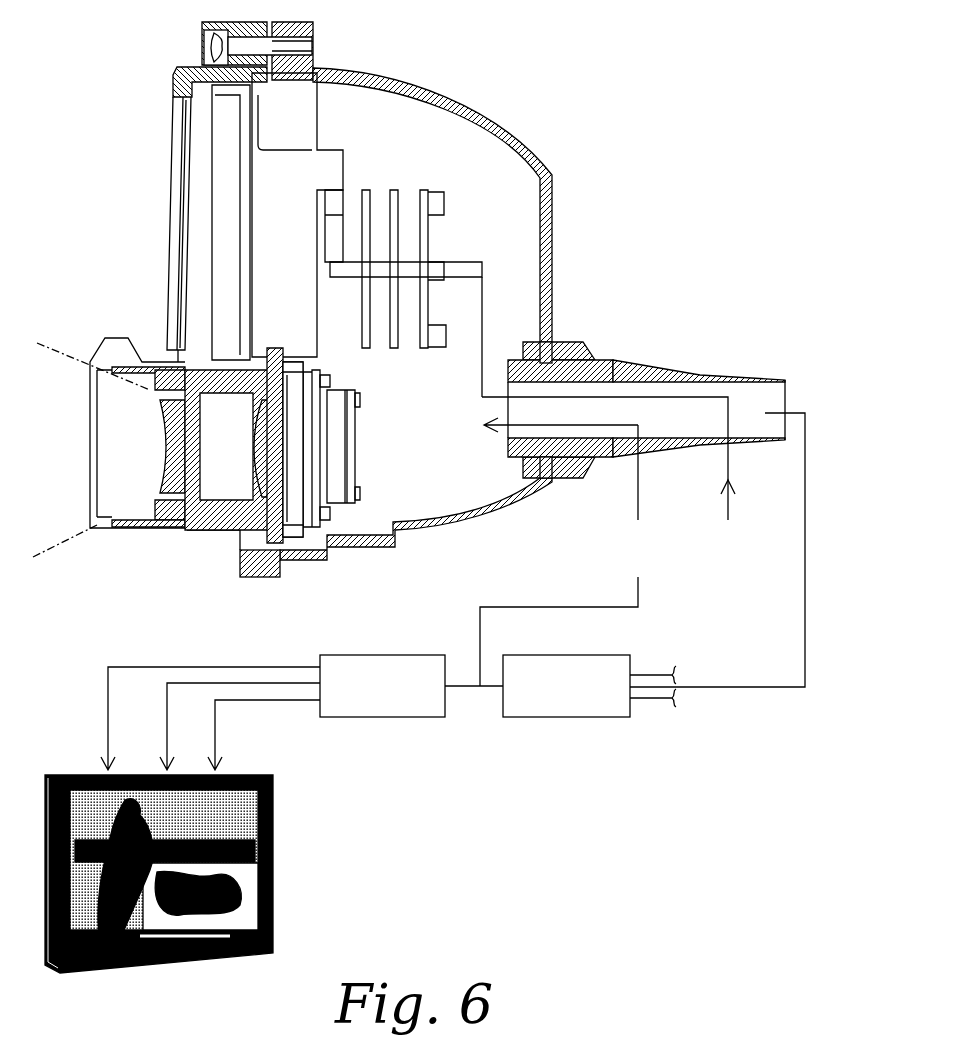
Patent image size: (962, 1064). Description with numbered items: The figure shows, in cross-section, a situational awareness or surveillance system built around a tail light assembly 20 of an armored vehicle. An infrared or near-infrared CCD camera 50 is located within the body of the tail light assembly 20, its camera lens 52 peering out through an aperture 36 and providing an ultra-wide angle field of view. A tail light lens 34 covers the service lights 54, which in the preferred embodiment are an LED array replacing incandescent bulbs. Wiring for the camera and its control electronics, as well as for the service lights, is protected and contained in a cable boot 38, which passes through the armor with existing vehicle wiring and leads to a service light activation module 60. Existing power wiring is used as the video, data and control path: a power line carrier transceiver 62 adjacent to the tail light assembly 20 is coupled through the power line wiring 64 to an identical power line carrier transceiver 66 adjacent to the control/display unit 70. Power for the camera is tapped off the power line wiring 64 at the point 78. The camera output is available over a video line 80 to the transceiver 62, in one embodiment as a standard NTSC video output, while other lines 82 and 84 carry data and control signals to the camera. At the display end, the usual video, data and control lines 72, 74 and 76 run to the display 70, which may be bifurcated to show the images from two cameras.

The tail light assembly 20 is at (408, 80).
The tail light lens 34 is at (168, 202).
The service lights 54 is at (173, 153).
The aperture 36 is at (128, 531).
The camera lens 52 is at (250, 473).
The infrared or near-infrared CCD camera 50 is at (336, 447).
The cable boot 38 is at (590, 330).
The service light activation module 60 is at (634, 505).
The power tap 78 is at (557, 607).
The video line 80 is at (718, 687).
The power line carrier transceiver 62 is at (566, 655).
The power line carrier transceiver 66 is at (384, 655).
The power line wiring 64 is at (465, 687).
The data line 82 is at (645, 672).
The control line 84 is at (645, 702).
The video line 72 is at (108, 721).
The data line 74 is at (167, 730).
The control line 76 is at (215, 744).
The control/display unit 70 is at (275, 893).